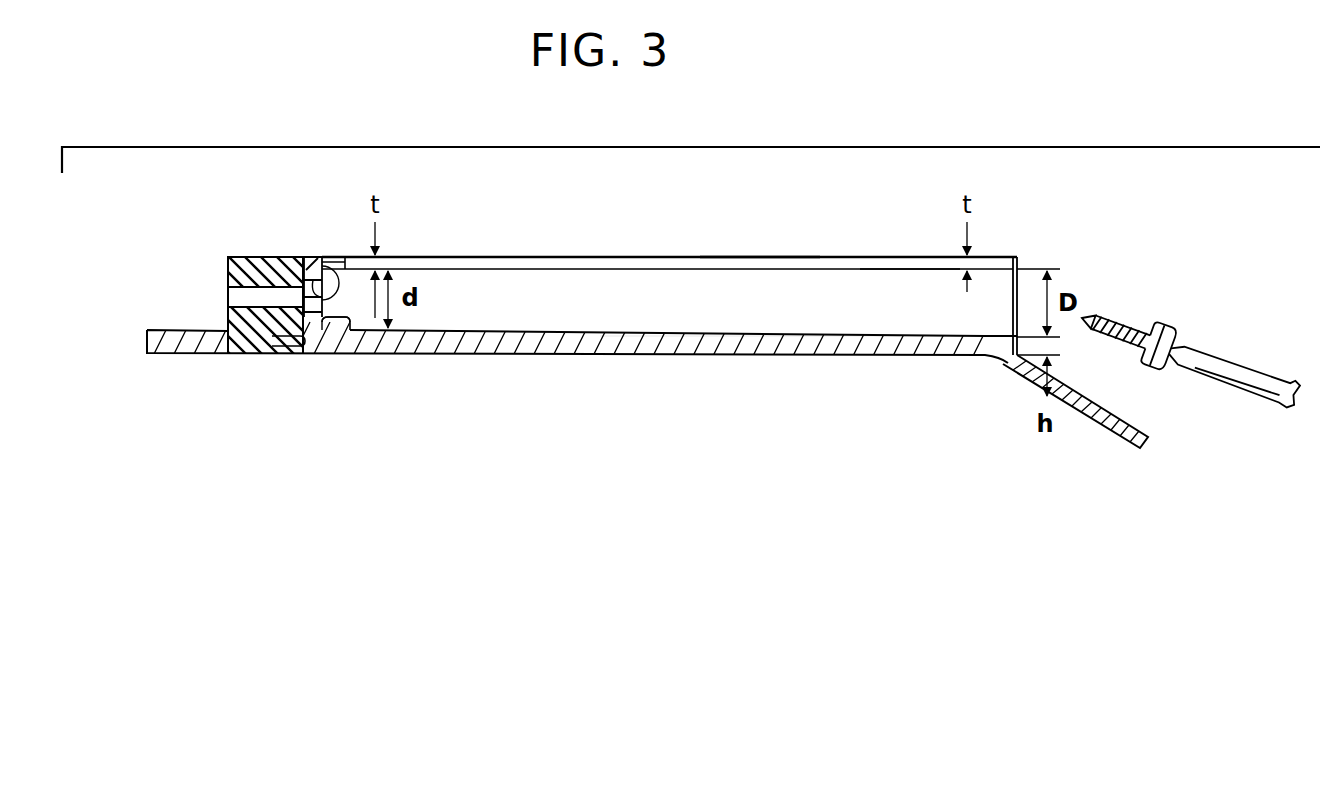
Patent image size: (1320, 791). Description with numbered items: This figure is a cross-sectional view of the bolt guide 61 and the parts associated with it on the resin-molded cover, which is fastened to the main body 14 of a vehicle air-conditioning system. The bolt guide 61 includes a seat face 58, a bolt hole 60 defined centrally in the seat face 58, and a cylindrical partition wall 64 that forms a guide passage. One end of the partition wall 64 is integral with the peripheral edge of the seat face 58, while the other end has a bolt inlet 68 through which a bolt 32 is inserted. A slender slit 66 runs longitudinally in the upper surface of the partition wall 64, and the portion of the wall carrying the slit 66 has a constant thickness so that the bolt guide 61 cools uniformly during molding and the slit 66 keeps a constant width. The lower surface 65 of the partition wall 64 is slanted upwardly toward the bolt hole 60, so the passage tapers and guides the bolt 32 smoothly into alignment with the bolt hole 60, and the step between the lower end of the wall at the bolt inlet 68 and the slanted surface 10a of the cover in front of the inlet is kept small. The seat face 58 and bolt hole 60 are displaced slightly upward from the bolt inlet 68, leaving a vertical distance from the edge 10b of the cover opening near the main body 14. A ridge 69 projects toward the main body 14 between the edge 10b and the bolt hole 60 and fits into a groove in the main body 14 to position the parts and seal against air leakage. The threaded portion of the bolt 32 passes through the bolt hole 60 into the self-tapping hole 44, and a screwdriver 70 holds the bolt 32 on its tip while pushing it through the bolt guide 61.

The main body 14 is at (240, 257).
The self-tapping hole 44 is at (262, 287).
The bolt hole 60 is at (336, 262).
The bolt guide 61 is at (594, 252).
The slit 66 is at (755, 258).
The partition wall 64 is at (905, 287).
The bolt inlet 68 is at (1020, 272).
The lower surface 65 is at (730, 333).
The ridge 69 is at (289, 353).
The seat face 58 is at (347, 353).
The edge of opening 10b is at (302, 354).
The slanted surface 10a is at (1118, 412).
The bolt 32 is at (1130, 308).
The screwdriver 70 is at (1222, 360).